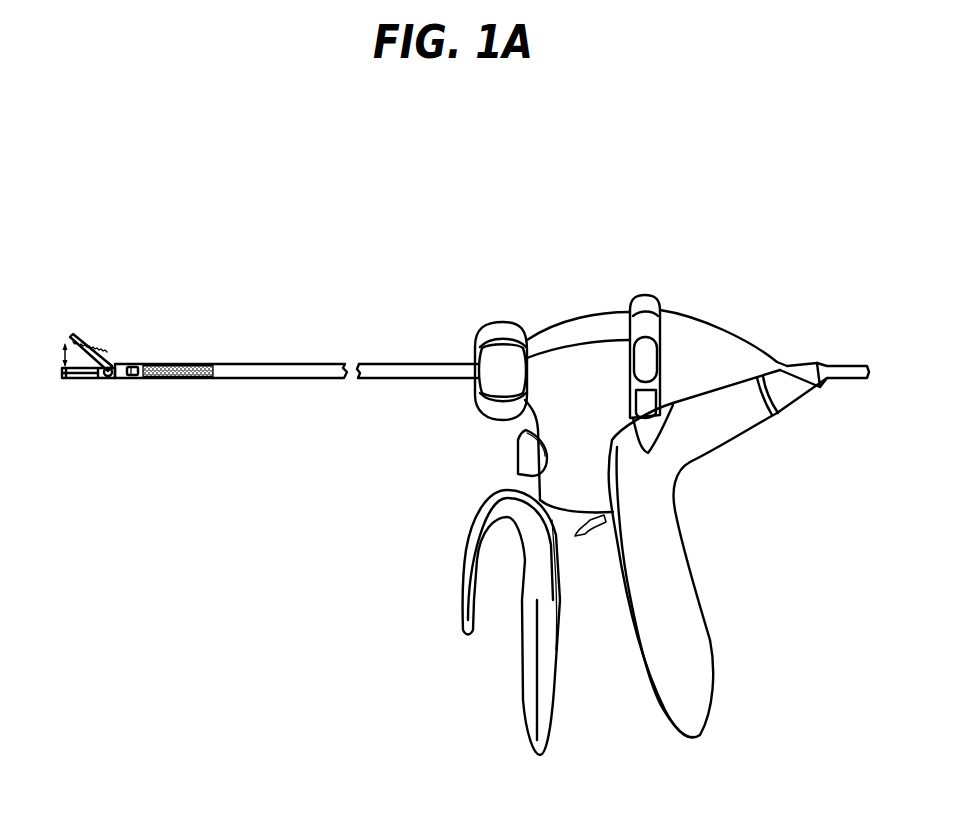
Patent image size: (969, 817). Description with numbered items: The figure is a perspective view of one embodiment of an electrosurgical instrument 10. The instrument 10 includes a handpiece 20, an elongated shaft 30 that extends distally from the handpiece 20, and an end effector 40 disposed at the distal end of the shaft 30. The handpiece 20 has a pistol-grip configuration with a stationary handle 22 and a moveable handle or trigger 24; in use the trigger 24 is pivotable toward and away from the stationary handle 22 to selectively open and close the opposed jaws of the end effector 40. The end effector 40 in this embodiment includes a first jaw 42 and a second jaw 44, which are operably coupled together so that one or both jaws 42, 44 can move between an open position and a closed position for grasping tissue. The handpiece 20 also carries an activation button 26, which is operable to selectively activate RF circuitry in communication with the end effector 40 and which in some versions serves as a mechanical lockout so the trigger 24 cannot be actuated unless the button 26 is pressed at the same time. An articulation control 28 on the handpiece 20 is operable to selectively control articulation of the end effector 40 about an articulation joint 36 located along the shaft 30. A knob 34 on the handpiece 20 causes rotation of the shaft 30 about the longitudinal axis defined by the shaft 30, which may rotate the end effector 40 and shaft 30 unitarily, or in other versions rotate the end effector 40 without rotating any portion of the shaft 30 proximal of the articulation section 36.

The electrosurgical instrument 10 is at (658, 167).
The handpiece 20 is at (727, 320).
The stationary handle 22 is at (702, 633).
The trigger 24 is at (528, 662).
The activation button 26 is at (523, 460).
The articulation control 28 is at (647, 315).
The elongated shaft 30 is at (290, 340).
The knob 34 is at (500, 330).
The articulation joint 36 is at (178, 358).
The end effector 40 is at (90, 315).
The first jaw 42 is at (83, 377).
The second jaw 44 is at (80, 347).